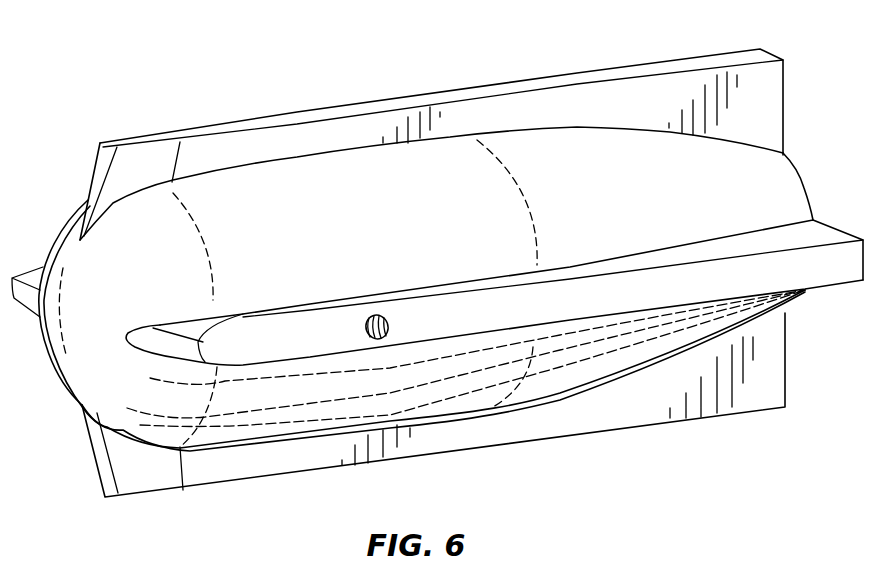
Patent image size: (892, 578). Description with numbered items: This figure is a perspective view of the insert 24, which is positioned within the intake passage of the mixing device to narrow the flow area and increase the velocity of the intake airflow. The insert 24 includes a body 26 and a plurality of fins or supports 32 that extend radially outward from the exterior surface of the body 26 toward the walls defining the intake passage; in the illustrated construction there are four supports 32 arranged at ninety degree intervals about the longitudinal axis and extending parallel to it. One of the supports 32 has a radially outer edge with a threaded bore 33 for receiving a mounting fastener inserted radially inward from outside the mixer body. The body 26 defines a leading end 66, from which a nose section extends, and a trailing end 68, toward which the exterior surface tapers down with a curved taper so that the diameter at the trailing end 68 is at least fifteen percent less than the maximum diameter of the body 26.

The insert 24 is at (177, 73).
The body 26 is at (328, 180).
The fins or supports 32 is at (585, 107).
The threaded bore 33 is at (390, 322).
The leading end 66 is at (67, 327).
The trailing end 68 is at (805, 182).